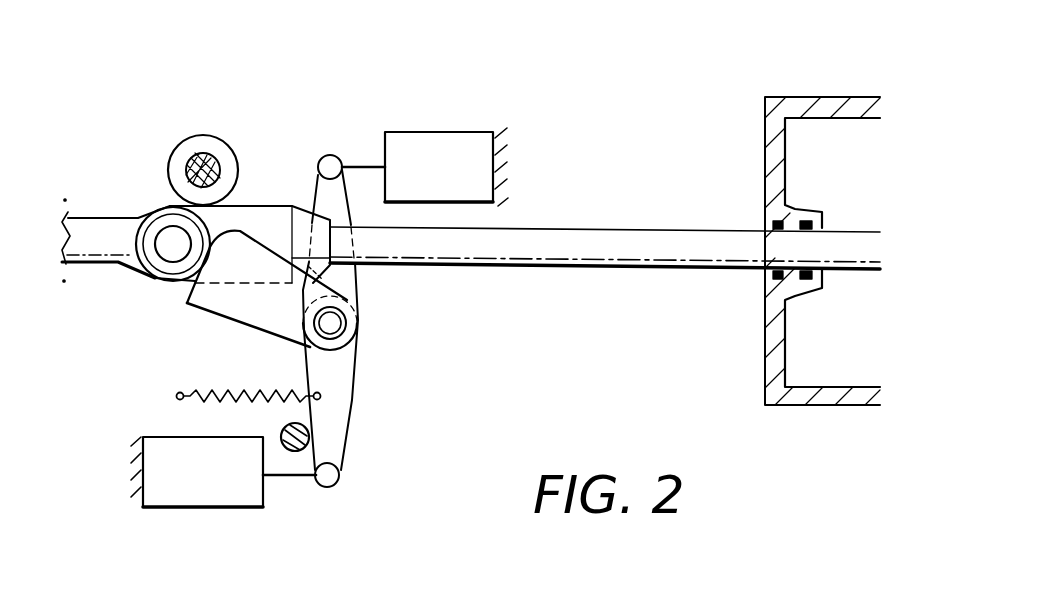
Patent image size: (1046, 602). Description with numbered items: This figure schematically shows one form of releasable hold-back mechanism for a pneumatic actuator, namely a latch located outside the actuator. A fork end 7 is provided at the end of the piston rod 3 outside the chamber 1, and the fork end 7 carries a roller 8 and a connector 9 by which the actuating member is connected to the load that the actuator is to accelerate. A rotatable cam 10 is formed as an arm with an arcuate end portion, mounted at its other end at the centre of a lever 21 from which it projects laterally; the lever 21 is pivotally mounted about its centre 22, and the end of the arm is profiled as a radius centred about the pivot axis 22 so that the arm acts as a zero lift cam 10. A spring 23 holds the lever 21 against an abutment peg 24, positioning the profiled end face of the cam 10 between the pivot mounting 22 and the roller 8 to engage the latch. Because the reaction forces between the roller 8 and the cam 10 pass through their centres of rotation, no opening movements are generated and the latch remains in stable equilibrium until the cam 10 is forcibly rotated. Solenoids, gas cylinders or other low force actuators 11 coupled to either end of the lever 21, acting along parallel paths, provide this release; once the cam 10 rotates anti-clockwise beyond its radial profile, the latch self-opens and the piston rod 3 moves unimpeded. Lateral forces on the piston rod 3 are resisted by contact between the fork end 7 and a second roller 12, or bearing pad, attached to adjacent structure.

The chamber 1 is at (855, 130).
The piston rod 3 is at (603, 247).
The fork end 7 is at (263, 230).
The roller 8 is at (162, 282).
The connector 9 is at (88, 226).
The rotatable cam 10 is at (242, 267).
The low force actuators 11 is at (437, 152).
The second roller 12 is at (220, 183).
The lever 21 is at (343, 285).
The pivot mounting 22 is at (330, 320).
The spring 23 is at (238, 398).
The abutment peg 24 is at (310, 440).